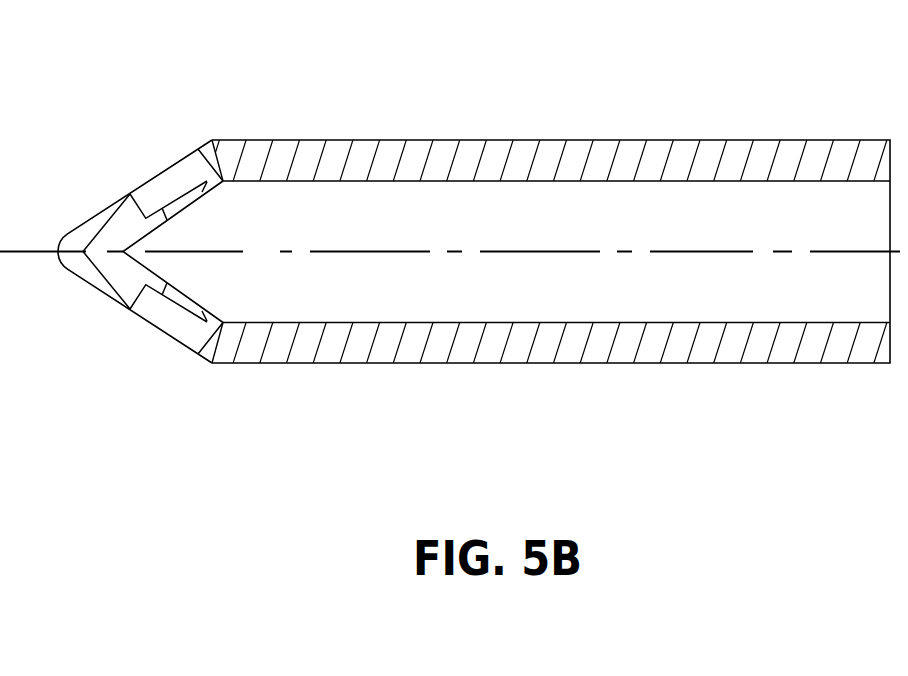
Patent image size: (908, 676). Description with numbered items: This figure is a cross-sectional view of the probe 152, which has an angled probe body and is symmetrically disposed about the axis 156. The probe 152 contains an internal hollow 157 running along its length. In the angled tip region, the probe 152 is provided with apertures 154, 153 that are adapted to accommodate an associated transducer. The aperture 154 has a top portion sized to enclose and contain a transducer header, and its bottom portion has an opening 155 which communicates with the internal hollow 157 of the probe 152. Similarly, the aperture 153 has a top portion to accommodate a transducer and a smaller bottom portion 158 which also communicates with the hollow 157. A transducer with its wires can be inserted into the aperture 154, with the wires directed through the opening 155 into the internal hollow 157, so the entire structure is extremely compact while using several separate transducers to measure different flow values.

The probe 152 is at (537, 158).
The aperture 153 is at (188, 332).
The aperture 154 is at (190, 168).
The opening 155 is at (198, 192).
The axis 156 is at (277, 250).
The internal hollow 157 is at (585, 215).
The bottom portion 158 is at (170, 292).